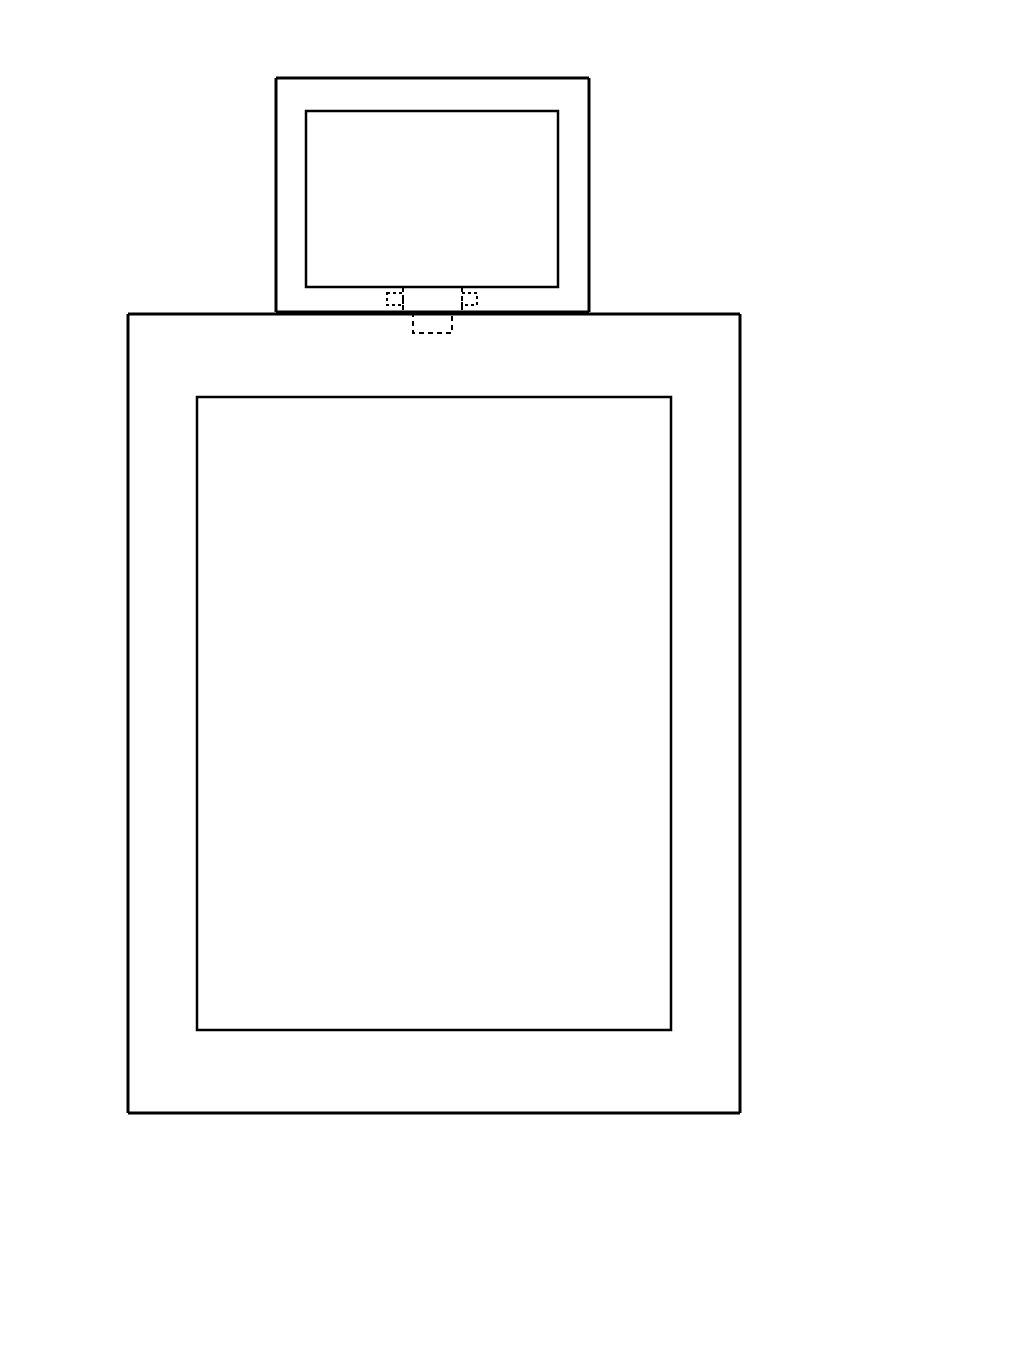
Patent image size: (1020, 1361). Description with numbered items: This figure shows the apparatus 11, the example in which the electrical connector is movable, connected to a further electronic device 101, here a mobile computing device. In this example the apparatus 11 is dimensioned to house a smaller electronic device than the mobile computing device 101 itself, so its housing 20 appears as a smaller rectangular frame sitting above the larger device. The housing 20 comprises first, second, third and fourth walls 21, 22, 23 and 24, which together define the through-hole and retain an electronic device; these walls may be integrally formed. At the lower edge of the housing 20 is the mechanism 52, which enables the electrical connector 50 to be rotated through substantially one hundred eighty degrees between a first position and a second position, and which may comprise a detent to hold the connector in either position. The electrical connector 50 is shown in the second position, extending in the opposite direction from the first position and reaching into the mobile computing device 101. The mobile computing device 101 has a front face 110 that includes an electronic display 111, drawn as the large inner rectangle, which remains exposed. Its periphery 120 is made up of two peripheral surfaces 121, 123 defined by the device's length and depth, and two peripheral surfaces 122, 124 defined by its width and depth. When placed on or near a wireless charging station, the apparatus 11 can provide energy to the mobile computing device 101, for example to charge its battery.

The apparatus 11 is at (215, 97).
The housing 20 is at (595, 72).
The first wall 21 is at (292, 197).
The second wall 22 is at (412, 97).
The third wall 23 is at (573, 185).
The fourth wall 24 is at (498, 286).
The electrical connector 50 is at (452, 333).
The mechanism 52 is at (420, 292).
The further electronic device 101 is at (148, 1130).
The front face 110 is at (712, 668).
The electronic display 111 is at (657, 588).
The periphery 120 is at (167, 310).
The peripheral surface 121 is at (740, 737).
The peripheral surface 122 is at (475, 1117).
The peripheral surface 123 is at (128, 812).
The peripheral surface 124 is at (692, 312).